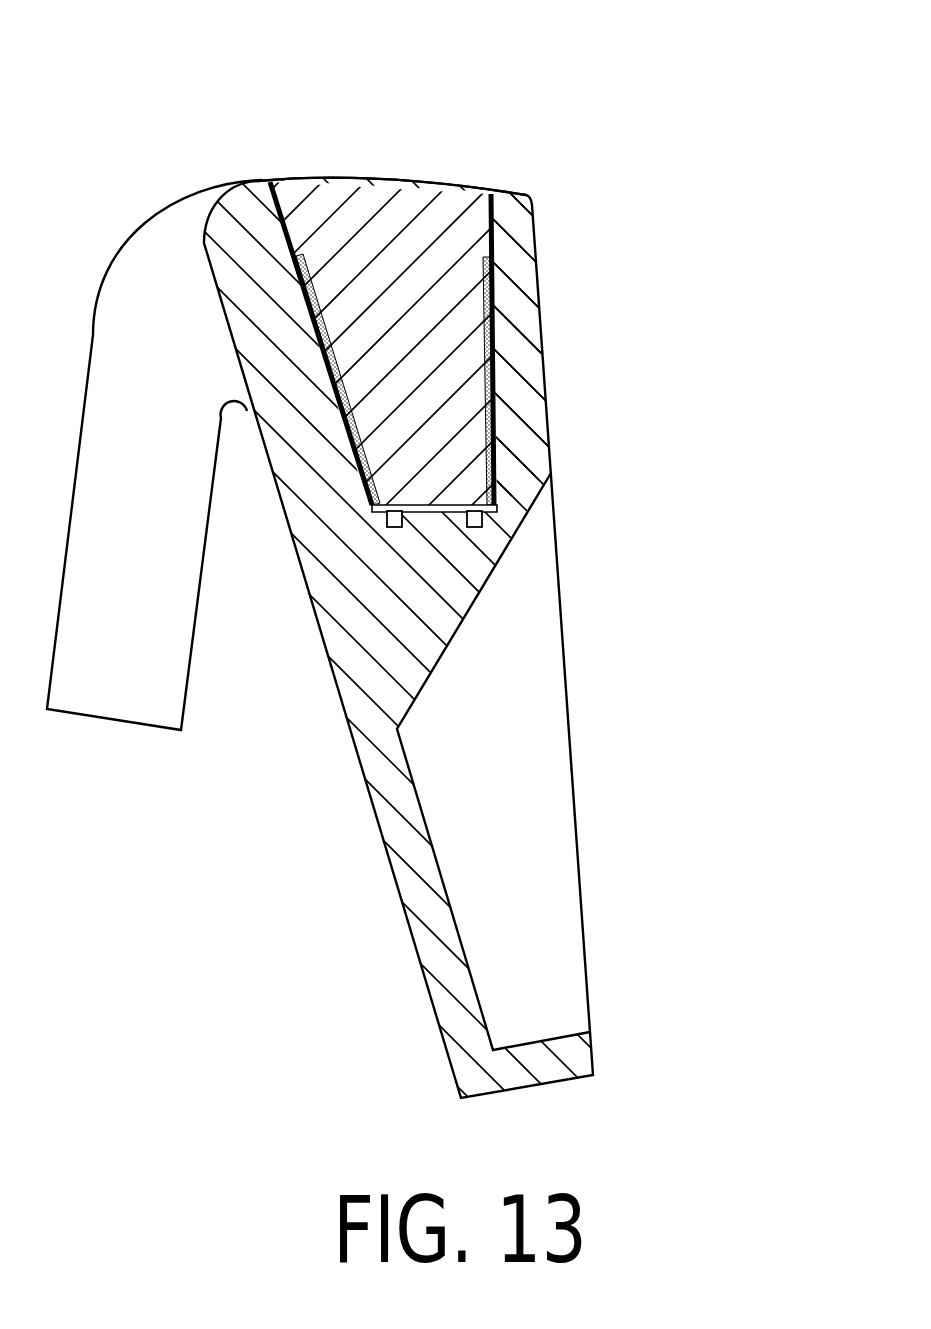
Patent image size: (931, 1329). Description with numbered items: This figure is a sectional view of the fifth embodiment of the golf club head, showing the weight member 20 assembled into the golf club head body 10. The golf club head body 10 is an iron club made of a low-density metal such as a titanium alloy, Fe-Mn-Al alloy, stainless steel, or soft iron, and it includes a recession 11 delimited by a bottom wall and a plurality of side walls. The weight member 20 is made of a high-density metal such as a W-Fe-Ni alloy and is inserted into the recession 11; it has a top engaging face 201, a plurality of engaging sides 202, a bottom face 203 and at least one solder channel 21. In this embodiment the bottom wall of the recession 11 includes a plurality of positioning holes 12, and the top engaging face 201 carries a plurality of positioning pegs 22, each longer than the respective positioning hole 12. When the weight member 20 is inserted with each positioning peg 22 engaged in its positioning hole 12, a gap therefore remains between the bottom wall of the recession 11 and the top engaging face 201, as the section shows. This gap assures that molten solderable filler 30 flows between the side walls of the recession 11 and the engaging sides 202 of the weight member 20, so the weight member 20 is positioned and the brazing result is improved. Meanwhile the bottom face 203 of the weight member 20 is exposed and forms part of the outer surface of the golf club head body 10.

The golf club head body 10 is at (530, 417).
The recession 11 is at (500, 340).
The positioning hole 12 is at (483, 511).
The weight member 20 is at (386, 145).
The solder channel 21 is at (493, 283).
The positioning peg 22 is at (637, 540).
The solderable filler 30 is at (497, 478).
The top engaging face 201 is at (465, 530).
The engaging side 202 is at (272, 222).
The bottom face 203 is at (330, 179).